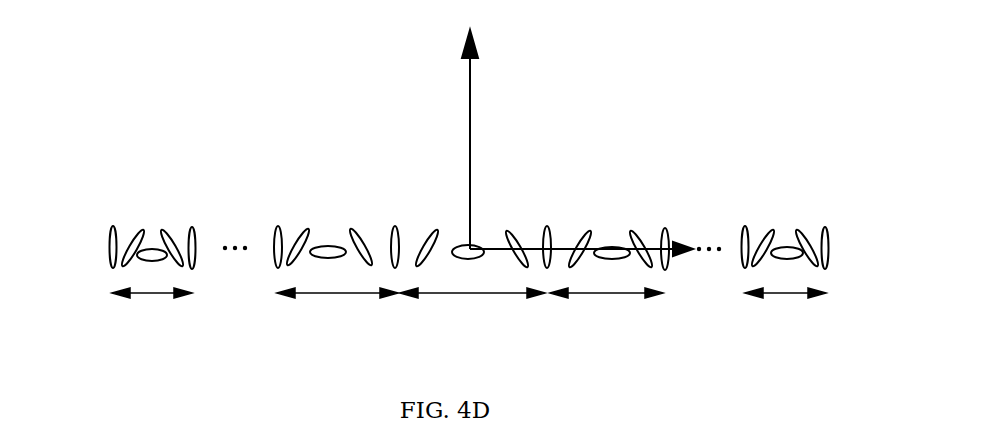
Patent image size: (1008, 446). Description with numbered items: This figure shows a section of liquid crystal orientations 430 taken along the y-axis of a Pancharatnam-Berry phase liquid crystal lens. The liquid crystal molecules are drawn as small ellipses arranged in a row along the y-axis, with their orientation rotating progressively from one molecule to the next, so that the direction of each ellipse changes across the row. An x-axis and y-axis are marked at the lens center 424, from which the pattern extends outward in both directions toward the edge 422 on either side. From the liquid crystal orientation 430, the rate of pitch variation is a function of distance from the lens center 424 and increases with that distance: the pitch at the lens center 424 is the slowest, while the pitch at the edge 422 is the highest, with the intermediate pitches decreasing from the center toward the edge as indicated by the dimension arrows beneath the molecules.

The LC orientations 430 is at (117, 58).
The edge 422 is at (860, 207).
The lens center 424 is at (468, 245).